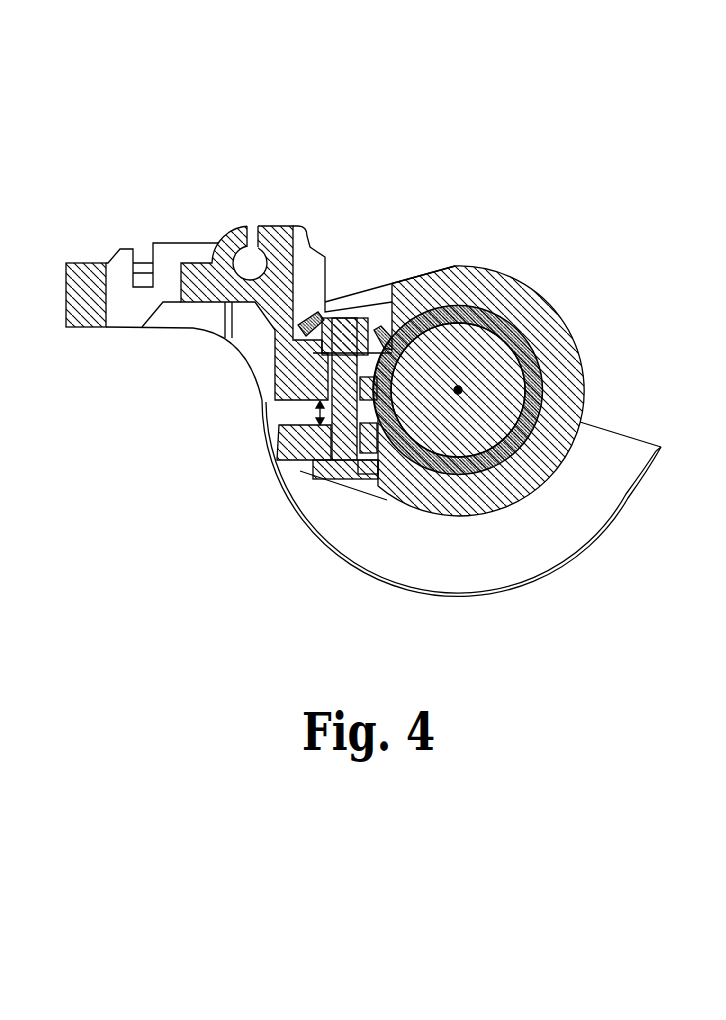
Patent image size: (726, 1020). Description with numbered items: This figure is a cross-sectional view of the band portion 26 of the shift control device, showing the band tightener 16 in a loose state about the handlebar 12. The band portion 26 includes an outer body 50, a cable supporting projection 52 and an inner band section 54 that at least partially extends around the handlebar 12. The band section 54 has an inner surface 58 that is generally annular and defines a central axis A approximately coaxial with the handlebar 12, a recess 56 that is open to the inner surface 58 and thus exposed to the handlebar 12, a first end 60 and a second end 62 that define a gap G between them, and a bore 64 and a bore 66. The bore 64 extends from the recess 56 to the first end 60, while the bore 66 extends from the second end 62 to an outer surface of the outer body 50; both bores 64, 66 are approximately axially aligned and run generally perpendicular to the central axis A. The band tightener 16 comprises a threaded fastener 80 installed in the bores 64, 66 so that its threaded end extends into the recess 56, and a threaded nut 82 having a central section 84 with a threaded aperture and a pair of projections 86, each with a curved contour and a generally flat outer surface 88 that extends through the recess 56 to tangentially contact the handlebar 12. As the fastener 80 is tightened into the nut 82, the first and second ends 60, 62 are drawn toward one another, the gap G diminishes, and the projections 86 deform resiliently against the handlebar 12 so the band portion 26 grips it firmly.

The handlebar 12 is at (492, 325).
The band tightener 16 is at (369, 419).
The band portion 26 is at (236, 212).
The outer body 50 is at (595, 540).
The cable supporting projection 52 is at (95, 330).
The inner band section 54 is at (540, 313).
The recess 56 is at (385, 303).
The inner surface 58 is at (452, 323).
The first end 60 is at (332, 404).
The second end 62 is at (318, 419).
The bore 64 is at (380, 412).
The bore 66 is at (356, 479).
The threaded fastener 80 is at (300, 471).
The threaded nut 82 is at (273, 373).
The central section 84 is at (329, 300).
The projections 86 is at (371, 312).
The outer surface 88 is at (275, 325).
The central axis A is at (458, 390).
The gap G is at (312, 430).